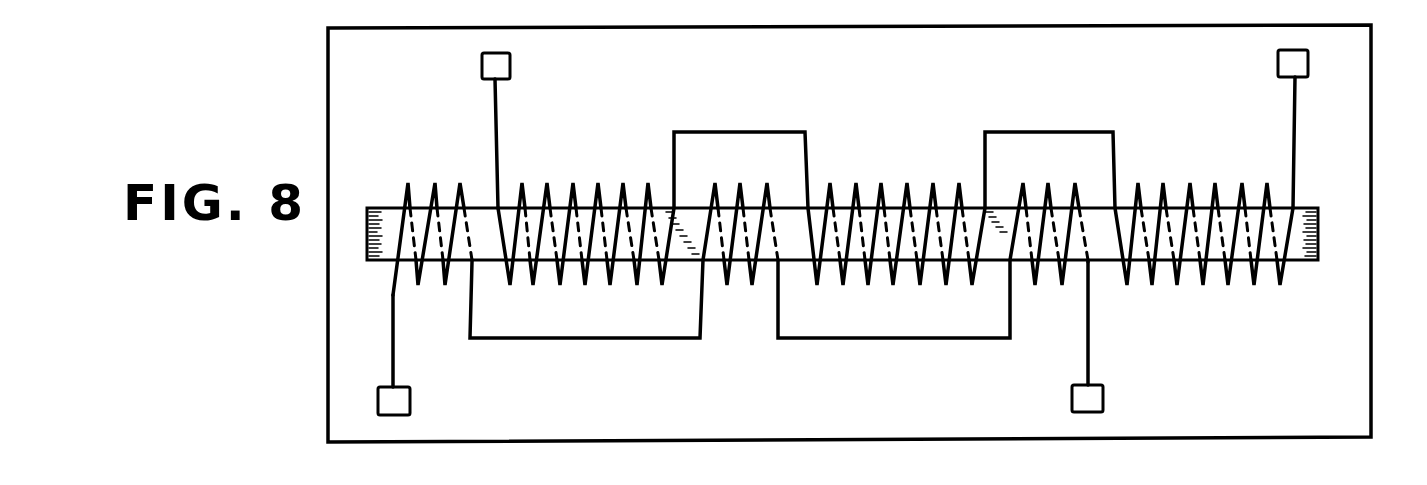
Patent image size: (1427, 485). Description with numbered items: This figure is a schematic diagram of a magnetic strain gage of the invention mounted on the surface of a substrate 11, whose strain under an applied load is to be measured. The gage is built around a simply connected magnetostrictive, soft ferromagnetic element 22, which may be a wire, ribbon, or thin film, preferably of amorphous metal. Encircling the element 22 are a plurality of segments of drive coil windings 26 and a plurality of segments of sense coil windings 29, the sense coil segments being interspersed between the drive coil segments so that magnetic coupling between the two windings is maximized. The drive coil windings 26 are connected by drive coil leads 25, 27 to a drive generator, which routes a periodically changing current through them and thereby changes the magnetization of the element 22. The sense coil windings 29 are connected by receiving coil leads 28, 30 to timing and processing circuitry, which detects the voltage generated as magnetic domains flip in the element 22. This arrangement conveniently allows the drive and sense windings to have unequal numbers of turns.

The substrate 11 is at (1357, 352).
The magnetostrictive, soft ferromagnetic element 22 is at (385, 208).
The drive coil lead 25 is at (394, 340).
The drive coil windings 26 is at (433, 182).
The drive coil lead 27 is at (1090, 343).
The receiving coil lead 28 is at (498, 103).
The sense coil windings 29 is at (580, 183).
The receiving coil lead 30 is at (1295, 101).